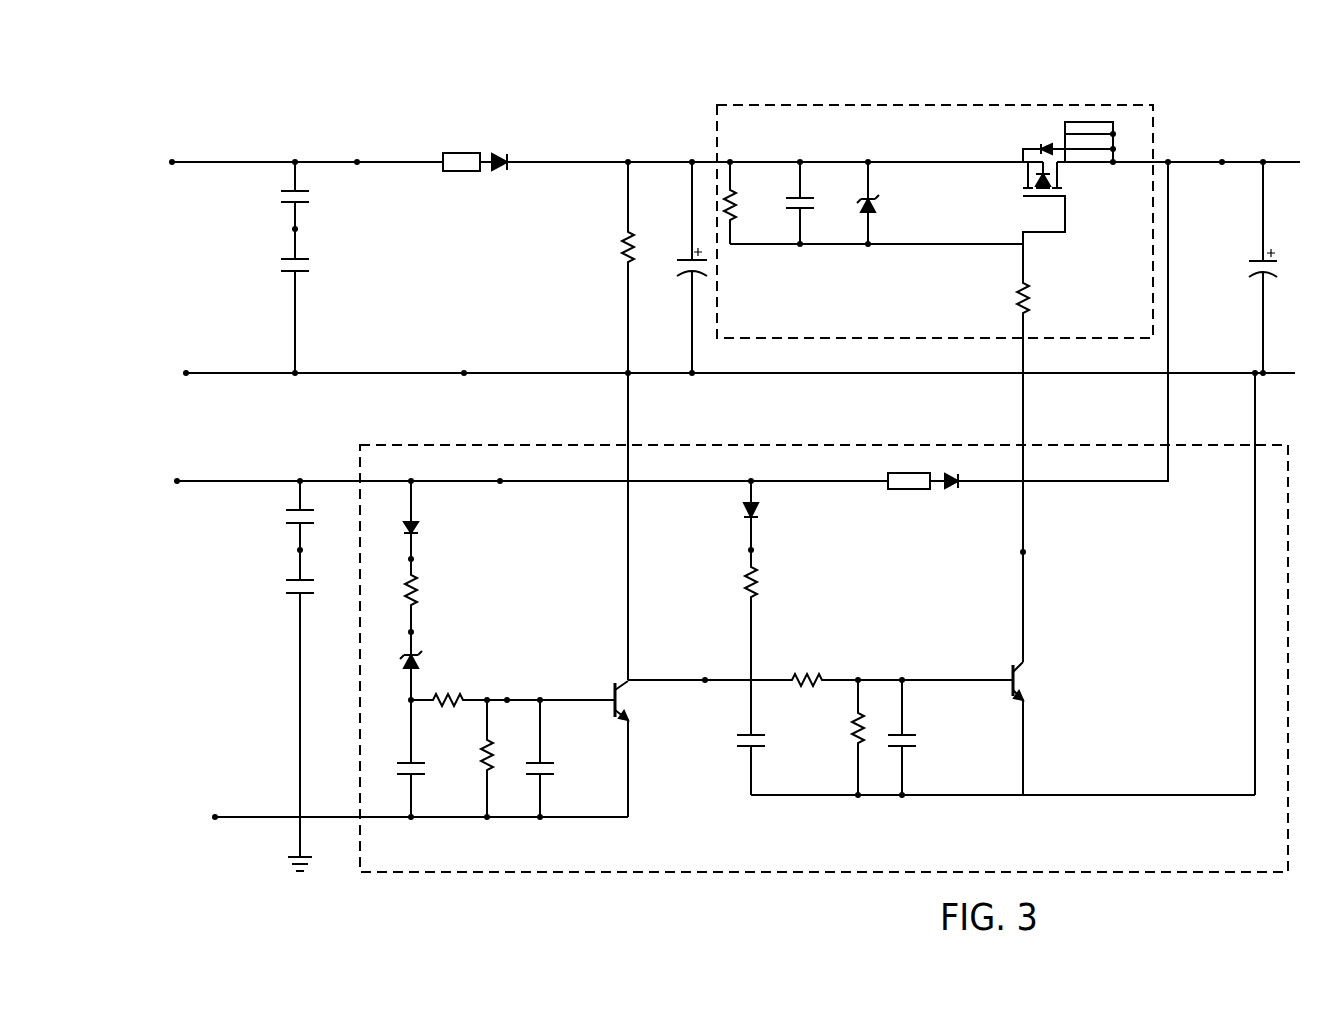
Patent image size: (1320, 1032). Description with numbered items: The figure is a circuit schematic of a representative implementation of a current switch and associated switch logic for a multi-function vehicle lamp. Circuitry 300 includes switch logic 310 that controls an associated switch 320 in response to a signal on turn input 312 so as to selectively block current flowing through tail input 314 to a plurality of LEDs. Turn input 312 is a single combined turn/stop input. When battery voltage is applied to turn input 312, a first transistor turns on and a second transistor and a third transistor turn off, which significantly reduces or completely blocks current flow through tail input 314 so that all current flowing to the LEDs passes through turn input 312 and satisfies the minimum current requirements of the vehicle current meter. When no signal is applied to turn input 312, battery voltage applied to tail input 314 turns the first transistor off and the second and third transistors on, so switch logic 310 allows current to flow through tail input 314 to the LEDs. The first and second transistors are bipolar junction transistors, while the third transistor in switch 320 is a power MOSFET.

The circuitry 300 is at (374, 89).
The switch logic 310 is at (797, 872).
The turn input 312 is at (258, 481).
The tail input 314 is at (248, 162).
The switch 320 is at (717, 160).